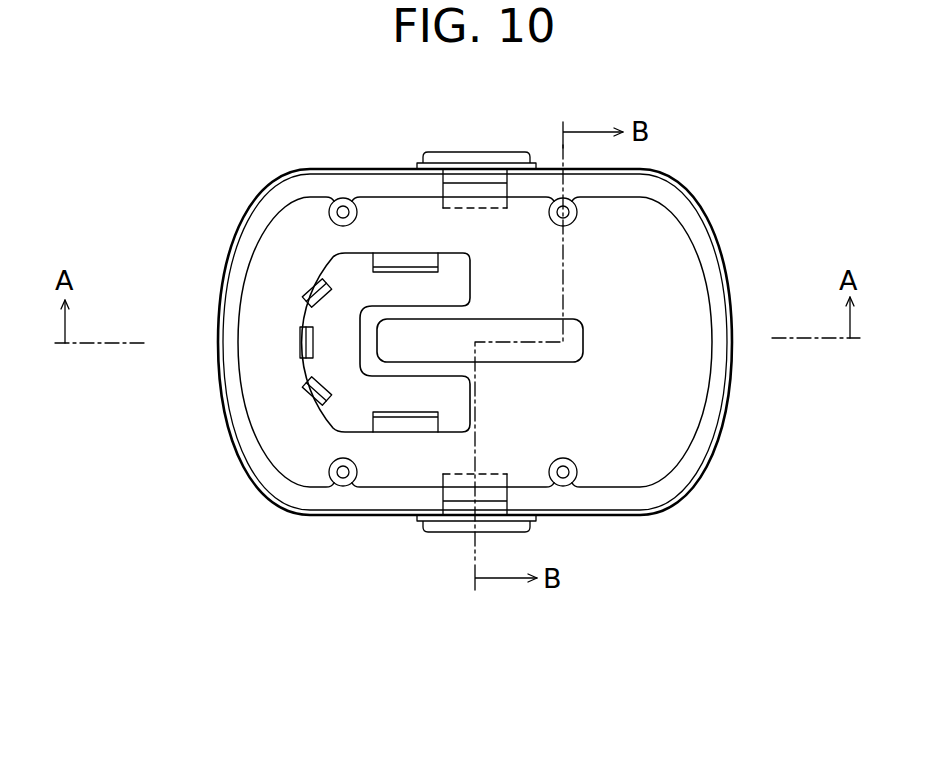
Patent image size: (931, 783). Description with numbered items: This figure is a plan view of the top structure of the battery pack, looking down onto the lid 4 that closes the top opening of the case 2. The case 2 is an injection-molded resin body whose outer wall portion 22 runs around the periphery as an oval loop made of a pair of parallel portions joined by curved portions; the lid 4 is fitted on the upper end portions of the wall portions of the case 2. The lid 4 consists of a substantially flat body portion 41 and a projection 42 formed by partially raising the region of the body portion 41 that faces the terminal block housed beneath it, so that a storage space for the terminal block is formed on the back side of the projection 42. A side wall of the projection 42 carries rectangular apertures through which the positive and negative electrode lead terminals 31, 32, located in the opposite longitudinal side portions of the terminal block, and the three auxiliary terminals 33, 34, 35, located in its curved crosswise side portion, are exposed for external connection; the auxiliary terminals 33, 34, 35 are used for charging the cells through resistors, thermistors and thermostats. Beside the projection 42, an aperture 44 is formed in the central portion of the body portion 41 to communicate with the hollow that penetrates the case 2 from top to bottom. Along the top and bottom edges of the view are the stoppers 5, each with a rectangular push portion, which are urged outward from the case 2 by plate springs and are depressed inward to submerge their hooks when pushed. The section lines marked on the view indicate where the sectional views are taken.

The case 2 is at (707, 447).
The lid 4 is at (673, 325).
The stopper 5 is at (440, 150).
The outer wall portion 22 is at (692, 207).
The positive electrode lead terminal 31 is at (385, 257).
The negative electrode lead terminal 32 is at (393, 422).
The auxiliary terminal 33 is at (305, 290).
The auxiliary terminal 34 is at (301, 334).
The auxiliary terminal 35 is at (308, 386).
The body portion 41 is at (677, 257).
The projection 42 is at (338, 421).
The aperture 44 is at (547, 347).